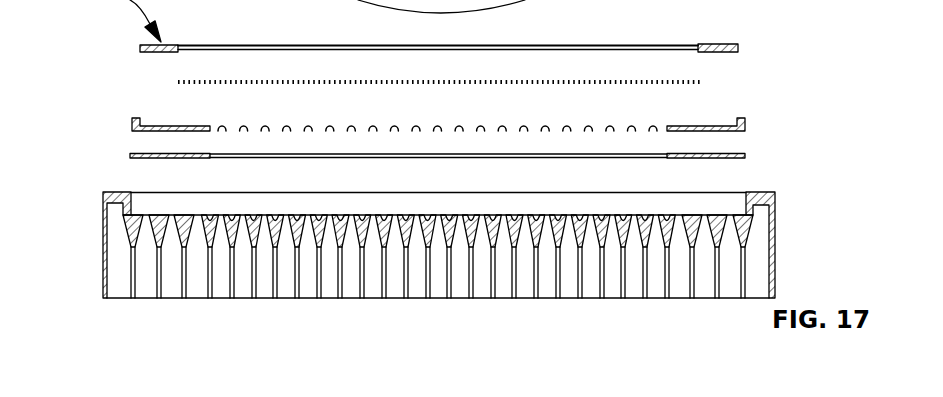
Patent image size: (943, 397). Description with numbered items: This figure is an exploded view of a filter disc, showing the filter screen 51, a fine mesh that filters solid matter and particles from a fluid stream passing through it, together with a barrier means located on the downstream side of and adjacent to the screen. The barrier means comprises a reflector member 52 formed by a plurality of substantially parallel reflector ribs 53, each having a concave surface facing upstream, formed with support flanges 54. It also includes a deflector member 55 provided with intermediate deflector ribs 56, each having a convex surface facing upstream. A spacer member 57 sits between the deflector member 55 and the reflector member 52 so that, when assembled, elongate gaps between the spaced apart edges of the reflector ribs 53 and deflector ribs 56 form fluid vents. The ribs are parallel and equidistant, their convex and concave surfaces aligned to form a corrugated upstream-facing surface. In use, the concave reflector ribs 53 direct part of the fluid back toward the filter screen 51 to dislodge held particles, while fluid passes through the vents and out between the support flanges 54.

The filter screen 51 is at (727, 93).
The reflector member 52 is at (775, 243).
The reflector ribs 53 is at (215, 198).
The support flanges 54 is at (485, 282).
The deflector member 55 is at (769, 134).
The deflector ribs 56 is at (205, 111).
The spacer member 57 is at (737, 170).